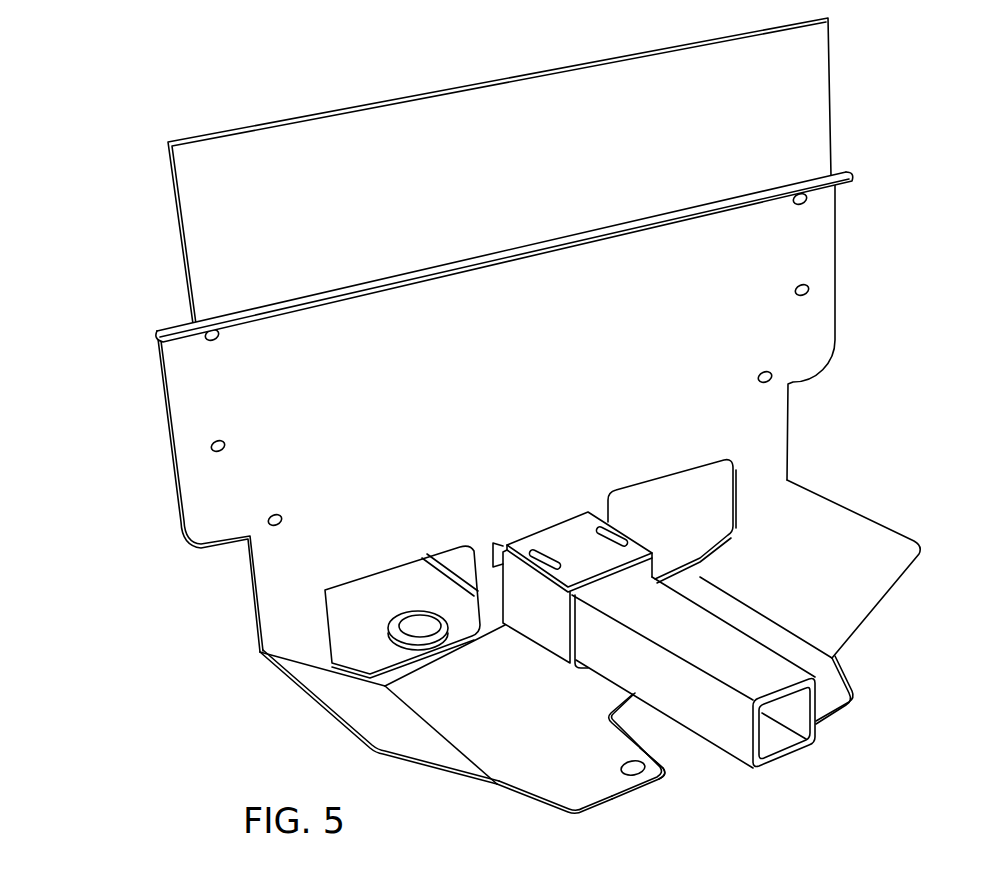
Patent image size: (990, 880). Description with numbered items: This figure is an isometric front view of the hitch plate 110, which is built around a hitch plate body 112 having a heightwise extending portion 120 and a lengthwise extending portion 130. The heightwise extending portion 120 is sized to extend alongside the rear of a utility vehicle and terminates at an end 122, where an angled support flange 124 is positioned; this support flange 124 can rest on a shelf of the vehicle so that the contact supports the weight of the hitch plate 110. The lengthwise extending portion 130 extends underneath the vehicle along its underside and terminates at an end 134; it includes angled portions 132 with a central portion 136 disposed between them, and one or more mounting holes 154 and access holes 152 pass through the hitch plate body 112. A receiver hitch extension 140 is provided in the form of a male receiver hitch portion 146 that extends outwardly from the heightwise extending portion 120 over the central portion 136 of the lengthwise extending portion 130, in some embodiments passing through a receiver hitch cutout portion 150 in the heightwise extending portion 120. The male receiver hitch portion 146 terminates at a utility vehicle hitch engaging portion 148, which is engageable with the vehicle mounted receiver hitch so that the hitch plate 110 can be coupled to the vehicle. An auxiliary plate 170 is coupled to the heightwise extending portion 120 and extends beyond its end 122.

The hitch plate 110 is at (900, 226).
The hitch plate body 112 is at (153, 482).
The heightwise extending portion 120 is at (504, 257).
The end of the heightwise extending portion 122 is at (325, 290).
The support flange 124 is at (440, 269).
The lengthwise extending portion 130 is at (526, 766).
The angled portion 132 is at (425, 736).
The end of the lengthwise extending portion 134 is at (647, 790).
The central portion 136 is at (588, 797).
The receiver hitch extension 140 is at (680, 592).
The male receiver hitch portion 146 is at (773, 670).
The utility vehicle hitch engaging portion 148 is at (798, 700).
The receiver hitch cutout portion 150 is at (508, 544).
The access hole 152 is at (344, 605).
The mounting hole 154 is at (800, 206).
The auxiliary plate 170 is at (192, 183).